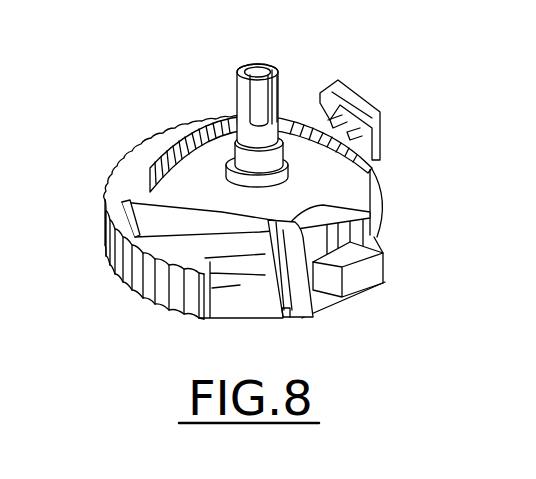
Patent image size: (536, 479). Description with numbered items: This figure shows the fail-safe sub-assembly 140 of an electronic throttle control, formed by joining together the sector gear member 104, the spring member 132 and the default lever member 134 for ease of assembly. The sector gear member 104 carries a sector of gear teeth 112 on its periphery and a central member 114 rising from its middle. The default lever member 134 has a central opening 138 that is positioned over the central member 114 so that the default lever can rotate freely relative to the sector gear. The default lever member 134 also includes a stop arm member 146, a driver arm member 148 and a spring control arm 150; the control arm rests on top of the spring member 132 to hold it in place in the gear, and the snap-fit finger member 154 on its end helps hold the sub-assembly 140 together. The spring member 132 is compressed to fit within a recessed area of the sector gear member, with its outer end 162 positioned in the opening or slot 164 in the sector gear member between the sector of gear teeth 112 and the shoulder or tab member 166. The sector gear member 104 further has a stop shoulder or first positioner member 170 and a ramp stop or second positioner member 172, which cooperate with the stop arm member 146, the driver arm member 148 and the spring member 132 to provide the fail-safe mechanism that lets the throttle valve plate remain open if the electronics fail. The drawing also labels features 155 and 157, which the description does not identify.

The sector gear member 104 is at (165, 133).
The sector of gear teeth 112 is at (173, 290).
The central member 114 is at (263, 63).
The spring member 132 is at (297, 257).
The default lever member 134 is at (152, 197).
The central opening 138 is at (233, 183).
The sub-assembly 140 is at (131, 304).
The stop arm member 146 is at (369, 172).
The driver arm member 148 is at (120, 202).
The spring control arm 150 is at (378, 233).
The snap-fit finger member 154 is at (338, 302).
The clip 155 is at (350, 87).
The clip slot 157 is at (326, 89).
The outer end 162 is at (255, 282).
The opening or slot 164 is at (232, 285).
The shoulder or tab member 166 is at (281, 318).
The stop shoulder or first positioner member 170 is at (388, 267).
The ramp stop or second positioner member 172 is at (368, 143).